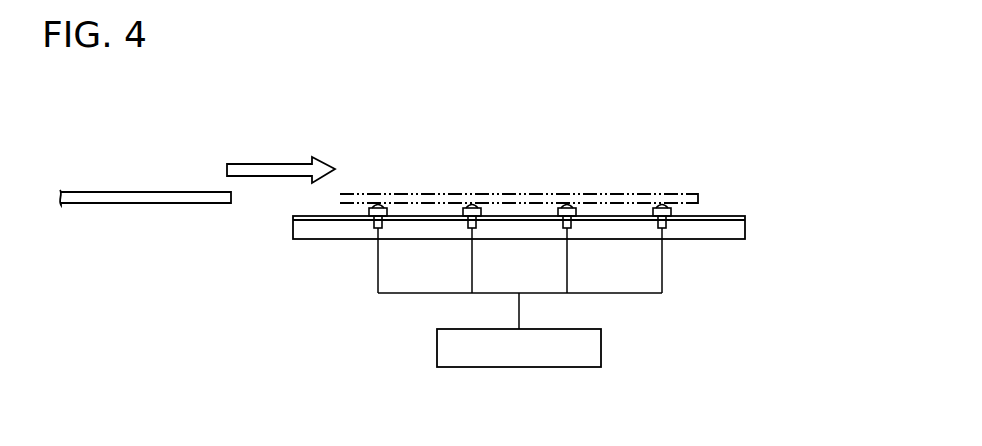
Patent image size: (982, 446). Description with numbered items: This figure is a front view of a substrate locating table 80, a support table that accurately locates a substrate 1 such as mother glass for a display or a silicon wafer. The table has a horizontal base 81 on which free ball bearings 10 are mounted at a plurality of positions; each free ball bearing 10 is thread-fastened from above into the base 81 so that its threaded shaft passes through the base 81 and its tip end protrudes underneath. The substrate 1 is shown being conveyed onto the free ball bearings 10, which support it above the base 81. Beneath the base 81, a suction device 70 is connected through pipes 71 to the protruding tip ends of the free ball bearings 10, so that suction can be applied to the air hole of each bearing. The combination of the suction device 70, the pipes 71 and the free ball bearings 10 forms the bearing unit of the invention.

The substrate 1 is at (140, 192).
The free ball bearing 10 is at (387, 212).
The suction device 70 is at (601, 346).
The pipe 71 is at (378, 262).
The substrate locating table 80 is at (572, 215).
The base 81 is at (745, 218).